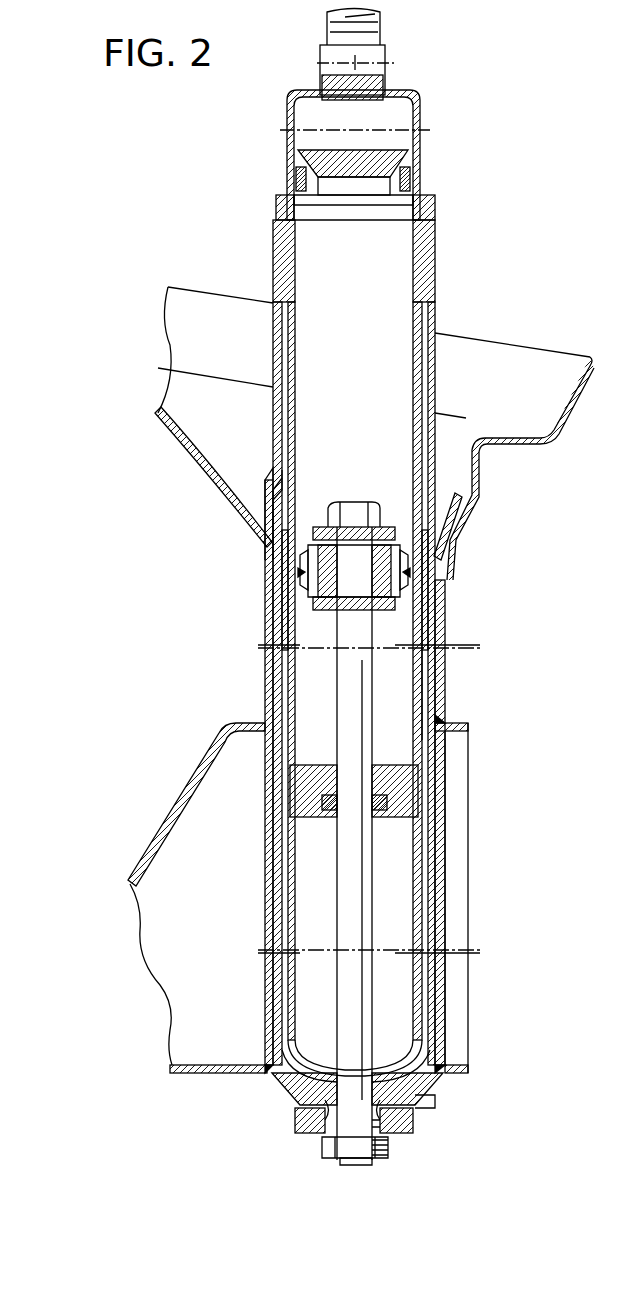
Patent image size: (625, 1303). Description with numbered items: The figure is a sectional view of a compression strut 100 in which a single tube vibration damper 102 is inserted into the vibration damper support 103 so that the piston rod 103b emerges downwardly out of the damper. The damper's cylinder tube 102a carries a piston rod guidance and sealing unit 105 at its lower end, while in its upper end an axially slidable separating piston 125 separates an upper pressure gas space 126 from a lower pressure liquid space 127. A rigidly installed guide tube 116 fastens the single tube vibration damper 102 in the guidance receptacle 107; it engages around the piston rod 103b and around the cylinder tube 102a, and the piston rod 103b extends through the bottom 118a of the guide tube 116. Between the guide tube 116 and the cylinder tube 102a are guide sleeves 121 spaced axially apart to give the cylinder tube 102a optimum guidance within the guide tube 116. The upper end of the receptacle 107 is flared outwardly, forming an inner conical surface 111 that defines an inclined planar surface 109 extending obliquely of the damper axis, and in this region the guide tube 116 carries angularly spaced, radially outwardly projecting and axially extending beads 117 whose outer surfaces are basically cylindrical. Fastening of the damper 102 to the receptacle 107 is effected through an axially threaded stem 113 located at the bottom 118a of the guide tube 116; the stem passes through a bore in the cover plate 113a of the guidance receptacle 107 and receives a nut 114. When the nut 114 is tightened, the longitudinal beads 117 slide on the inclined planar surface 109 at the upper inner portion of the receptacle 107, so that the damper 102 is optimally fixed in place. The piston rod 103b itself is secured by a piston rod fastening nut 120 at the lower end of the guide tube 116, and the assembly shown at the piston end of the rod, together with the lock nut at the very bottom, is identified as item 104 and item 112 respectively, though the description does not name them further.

The compression strut 100 is at (118, 504).
The single tube vibration damper 102 is at (274, 226).
The cylinder tube 102a is at (420, 702).
The vibration damper support 103 is at (143, 862).
The piston rod 103b is at (358, 905).
The piston assembly 104 is at (382, 515).
The piston rod guidance and sealing unit 105 is at (320, 773).
The guidance receptacle 107 is at (445, 822).
The inclined planar surface 109 is at (442, 516).
The inner conical surface 111 is at (450, 550).
The lock nut 112 is at (392, 1148).
The axially threaded stem 113 is at (412, 1121).
The cover plate 113a is at (447, 1100).
The nut 114 is at (295, 1120).
The guide tube 116 is at (436, 775).
The beads 117 is at (265, 506).
The bottom of the guide tube 118a is at (392, 1065).
The piston rod fastening nut 120 is at (325, 1149).
The guide sleeves 121 is at (432, 255).
The separating piston 125 is at (375, 173).
The upper pressure gas space 126 is at (403, 112).
The lower pressure liquid space 127 is at (410, 222).